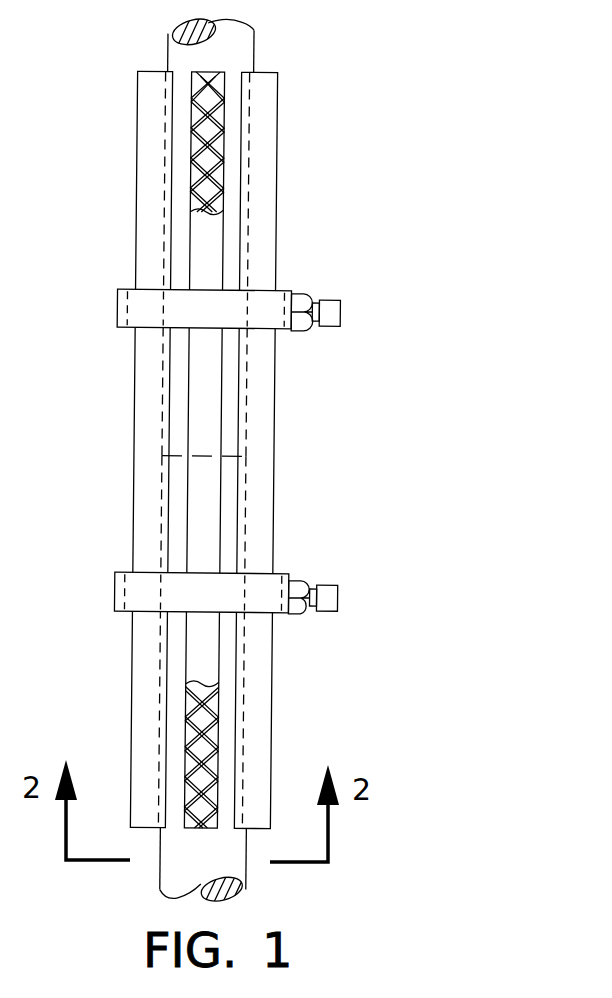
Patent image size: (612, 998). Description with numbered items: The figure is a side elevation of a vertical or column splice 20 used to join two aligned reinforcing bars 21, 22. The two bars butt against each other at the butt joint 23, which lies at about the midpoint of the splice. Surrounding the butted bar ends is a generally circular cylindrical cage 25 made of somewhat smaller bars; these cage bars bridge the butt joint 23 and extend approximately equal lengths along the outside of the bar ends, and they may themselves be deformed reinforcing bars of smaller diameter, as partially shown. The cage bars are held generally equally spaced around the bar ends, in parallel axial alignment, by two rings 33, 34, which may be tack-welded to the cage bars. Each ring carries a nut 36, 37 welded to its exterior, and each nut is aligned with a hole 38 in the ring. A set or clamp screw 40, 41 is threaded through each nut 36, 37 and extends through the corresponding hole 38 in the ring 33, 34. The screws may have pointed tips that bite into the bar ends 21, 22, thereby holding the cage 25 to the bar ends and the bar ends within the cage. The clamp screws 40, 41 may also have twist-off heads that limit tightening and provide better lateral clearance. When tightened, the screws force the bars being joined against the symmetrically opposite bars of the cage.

The vertical or column splice 20 is at (386, 398).
The reinforcing bar 21 is at (250, 50).
The reinforcing bar 22 is at (168, 867).
The butt joint 23 is at (225, 456).
The cage of smaller bars 25 is at (278, 225).
The ring 33 is at (128, 328).
The ring 34 is at (127, 613).
The nut 36 is at (312, 293).
The nut 37 is at (300, 580).
The hole 38 is at (283, 330).
The set or clamp screw 40 is at (339, 312).
The set or clamp screw 41 is at (339, 599).